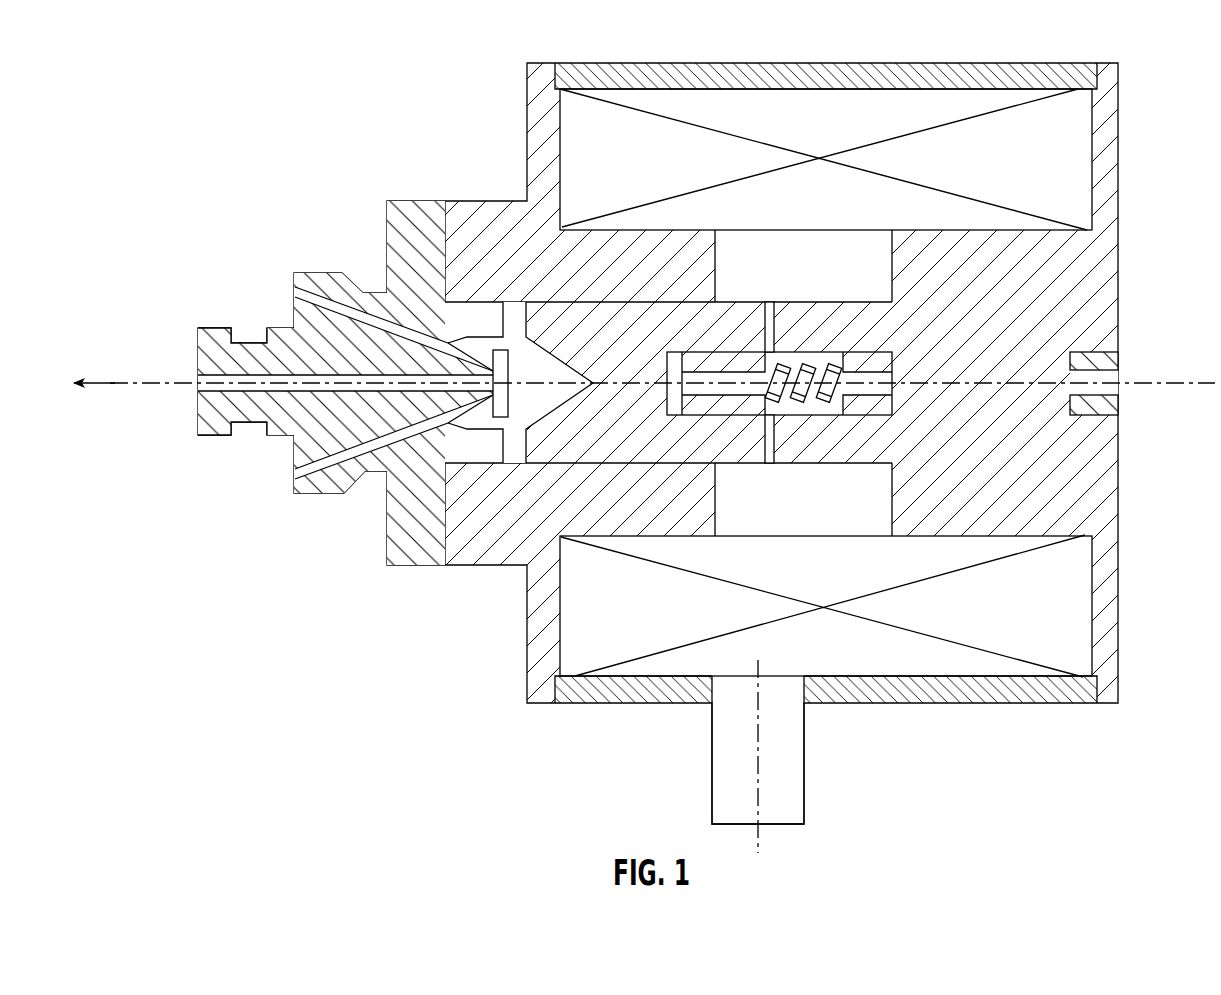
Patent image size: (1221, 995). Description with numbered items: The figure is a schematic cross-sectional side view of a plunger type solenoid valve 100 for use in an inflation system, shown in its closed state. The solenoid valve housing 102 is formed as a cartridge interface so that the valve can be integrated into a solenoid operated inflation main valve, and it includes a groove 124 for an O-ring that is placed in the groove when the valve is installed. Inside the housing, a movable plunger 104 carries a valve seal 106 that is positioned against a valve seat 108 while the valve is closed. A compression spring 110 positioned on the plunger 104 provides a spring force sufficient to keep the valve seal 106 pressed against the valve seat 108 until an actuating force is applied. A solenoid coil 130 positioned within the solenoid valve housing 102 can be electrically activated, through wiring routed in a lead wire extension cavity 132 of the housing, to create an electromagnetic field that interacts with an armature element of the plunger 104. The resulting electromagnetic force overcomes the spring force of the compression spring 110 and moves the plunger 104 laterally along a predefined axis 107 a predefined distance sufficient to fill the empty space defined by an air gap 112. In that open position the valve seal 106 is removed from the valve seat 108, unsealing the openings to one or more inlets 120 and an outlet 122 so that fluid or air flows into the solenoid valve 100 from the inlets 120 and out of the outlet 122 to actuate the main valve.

The plunger type solenoid valve 100 is at (644, 430).
The solenoid valve housing 102 is at (1118, 290).
The plunger 104 is at (726, 424).
The valve seal 106 is at (500, 350).
The predefined axis 107 is at (1210, 386).
The valve seat 108 is at (383, 297).
The compression spring 110 is at (843, 387).
The air gap 112 is at (756, 336).
The inlets 120 is at (280, 290).
The outlet 122 is at (105, 378).
The groove 124 is at (243, 439).
The solenoid coil 130 is at (827, 157).
The lead wire extension cavity 132 is at (711, 766).